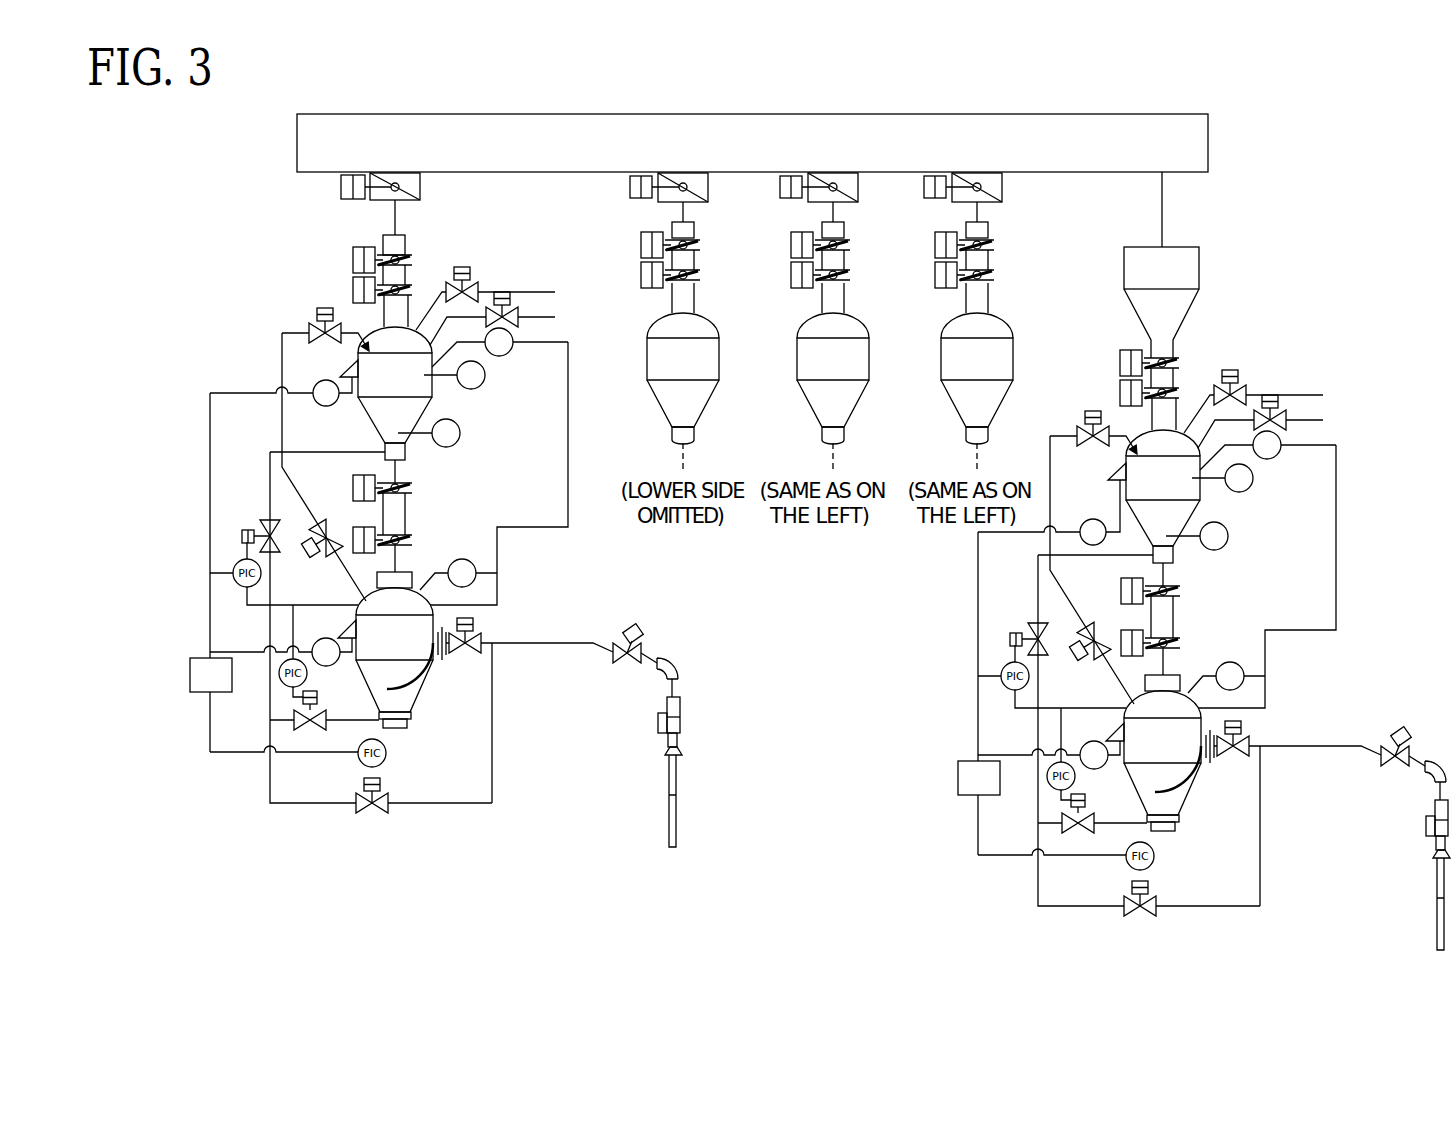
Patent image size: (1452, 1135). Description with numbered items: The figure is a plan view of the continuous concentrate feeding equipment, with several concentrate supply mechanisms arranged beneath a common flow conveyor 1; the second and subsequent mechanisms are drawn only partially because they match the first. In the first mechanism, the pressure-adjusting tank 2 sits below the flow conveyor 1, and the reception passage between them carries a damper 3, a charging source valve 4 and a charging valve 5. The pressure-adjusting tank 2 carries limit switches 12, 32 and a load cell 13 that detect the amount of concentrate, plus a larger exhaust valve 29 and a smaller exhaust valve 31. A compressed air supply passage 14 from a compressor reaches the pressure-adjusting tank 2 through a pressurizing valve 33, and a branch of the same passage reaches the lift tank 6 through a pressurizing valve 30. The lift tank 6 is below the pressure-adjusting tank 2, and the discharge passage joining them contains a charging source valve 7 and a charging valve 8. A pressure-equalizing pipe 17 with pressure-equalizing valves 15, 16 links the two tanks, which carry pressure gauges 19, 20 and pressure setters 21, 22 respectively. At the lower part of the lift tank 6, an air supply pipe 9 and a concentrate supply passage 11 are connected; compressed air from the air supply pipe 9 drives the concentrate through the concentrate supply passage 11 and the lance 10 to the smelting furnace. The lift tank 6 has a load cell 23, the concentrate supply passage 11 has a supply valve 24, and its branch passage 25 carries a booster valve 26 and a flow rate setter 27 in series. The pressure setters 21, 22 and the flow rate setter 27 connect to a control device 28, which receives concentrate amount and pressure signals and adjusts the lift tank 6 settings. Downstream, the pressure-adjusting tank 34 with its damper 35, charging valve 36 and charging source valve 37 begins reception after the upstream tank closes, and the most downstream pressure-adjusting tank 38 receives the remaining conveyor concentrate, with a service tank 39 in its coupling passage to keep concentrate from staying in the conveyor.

The flow conveyor 1 is at (510, 150).
The pressure-adjusting tank 2 is at (418, 403).
The damper 3 is at (410, 185).
The charging source valve 4 is at (352, 262).
The charging valve 5 is at (352, 295).
The lift tank 6 is at (405, 700).
The charging source valve 7 is at (410, 491).
The charging valve 8 is at (410, 540).
The air supply pipe 9 is at (437, 802).
The lance 10 is at (668, 767).
The concentrate supply passage 11 is at (520, 640).
The limit switch 12 is at (453, 447).
The load cell 13 is at (352, 386).
The compressed air supply passage 14 is at (300, 804).
The pressure-equalizing valve 15 is at (320, 560).
The pressure-equalizing valve 16 is at (318, 323).
The pressure-equalizing pipe 17 is at (282, 433).
The pressure gauge 19 is at (505, 355).
The pressure gauge 20 is at (470, 560).
The pressure setter 21 is at (247, 590).
The pressure setter 22 is at (285, 684).
The load cell 23 is at (327, 667).
The supply valve 24 is at (465, 657).
The branch passage 25 is at (495, 648).
The booster valve 26 is at (364, 781).
The flow rate setter 27 is at (387, 755).
The control device 28 is at (200, 693).
The larger exhaust valve 29 is at (473, 280).
The pressurizing valve 30 is at (320, 722).
The smaller exhaust valve 31 is at (520, 318).
The limit switch 32 is at (479, 388).
The pressurizing valve 33 is at (250, 526).
The pressure-adjusting tank 34 is at (670, 398).
The damper 35 is at (712, 190).
The charging valve 36 is at (640, 276).
The charging source valve 37 is at (641, 247).
The pressure-adjusting tank 38 is at (1195, 503).
The service tank 39 is at (1200, 278).